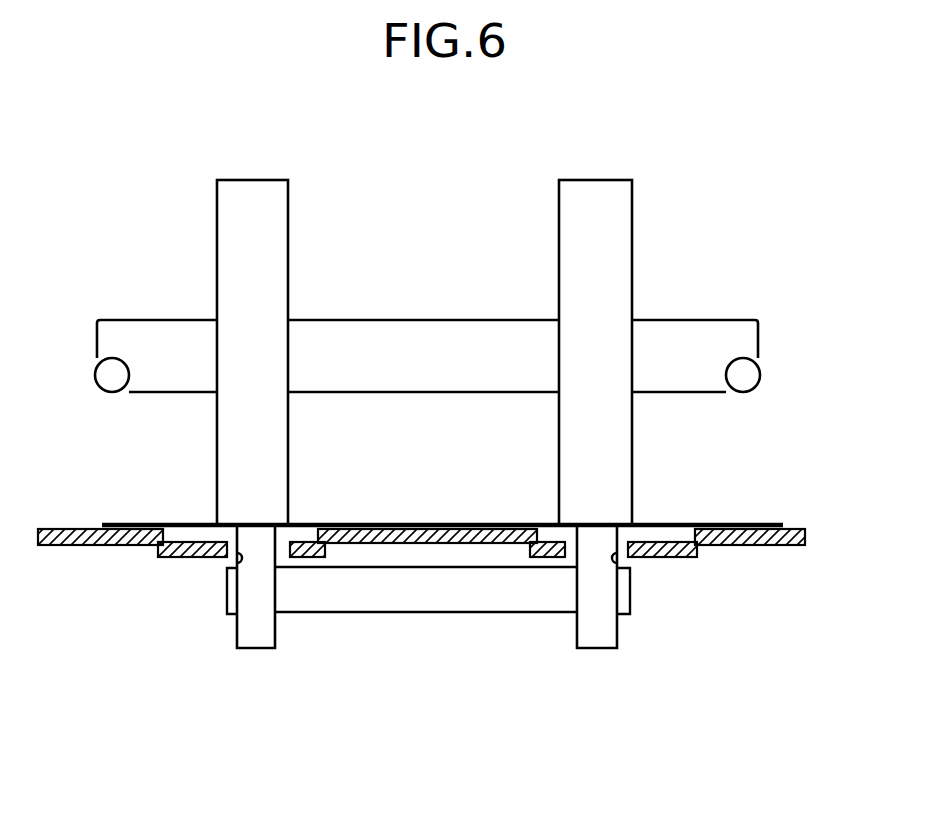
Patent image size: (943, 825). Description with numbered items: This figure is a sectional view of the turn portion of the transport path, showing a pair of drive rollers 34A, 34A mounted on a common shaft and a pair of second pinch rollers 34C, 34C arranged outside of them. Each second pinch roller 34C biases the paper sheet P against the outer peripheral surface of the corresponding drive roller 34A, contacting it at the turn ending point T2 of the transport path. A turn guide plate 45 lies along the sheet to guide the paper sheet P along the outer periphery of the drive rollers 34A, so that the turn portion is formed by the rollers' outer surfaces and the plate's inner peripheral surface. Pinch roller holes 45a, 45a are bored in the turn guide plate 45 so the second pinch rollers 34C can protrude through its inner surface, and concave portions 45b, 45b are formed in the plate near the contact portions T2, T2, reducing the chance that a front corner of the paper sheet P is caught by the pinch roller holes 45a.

The drive roller 34A is at (230, 243).
The second pinch roller 34C is at (253, 640).
The turn guide plate 45 is at (75, 543).
The pinch roller hole 45a is at (232, 572).
The concave portion 45b is at (185, 543).
The paper sheet P is at (742, 523).
The turn ending point T2 is at (257, 522).